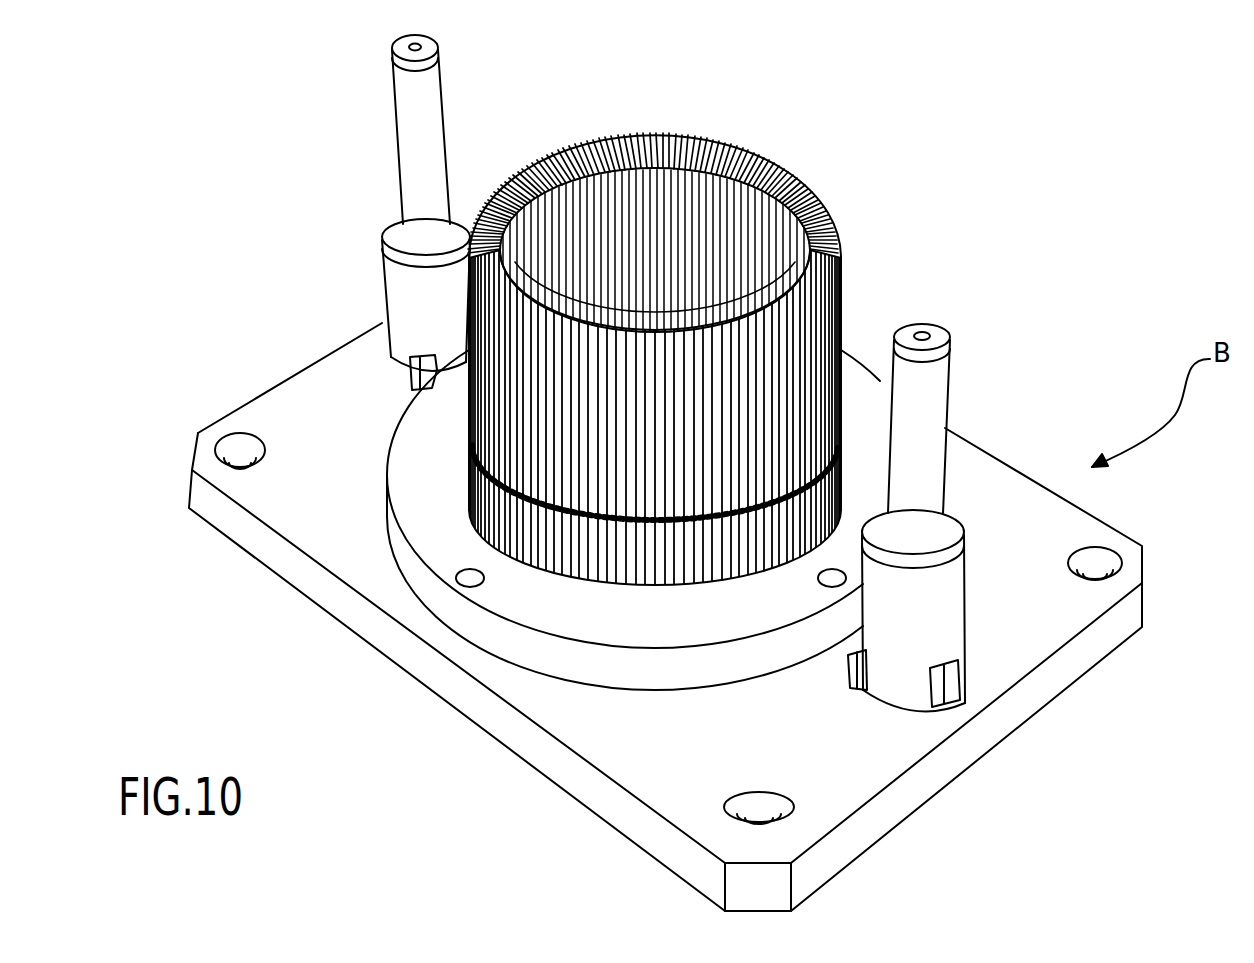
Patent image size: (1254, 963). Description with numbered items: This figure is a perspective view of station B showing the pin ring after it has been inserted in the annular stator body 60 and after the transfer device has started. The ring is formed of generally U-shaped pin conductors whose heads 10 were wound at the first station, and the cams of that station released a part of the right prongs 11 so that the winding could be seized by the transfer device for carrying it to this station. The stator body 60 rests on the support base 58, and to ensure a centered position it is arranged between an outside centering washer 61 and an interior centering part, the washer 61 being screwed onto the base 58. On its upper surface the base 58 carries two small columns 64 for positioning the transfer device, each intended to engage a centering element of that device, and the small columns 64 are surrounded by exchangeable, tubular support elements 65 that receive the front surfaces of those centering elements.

The heads 10 is at (828, 218).
The right prongs 11 is at (800, 395).
The support base 58 is at (948, 752).
The annular stator body 60 is at (633, 558).
The outside centering washer 61 is at (707, 668).
The small columns 64 is at (412, 155).
The tubular support elements 65 is at (413, 297).